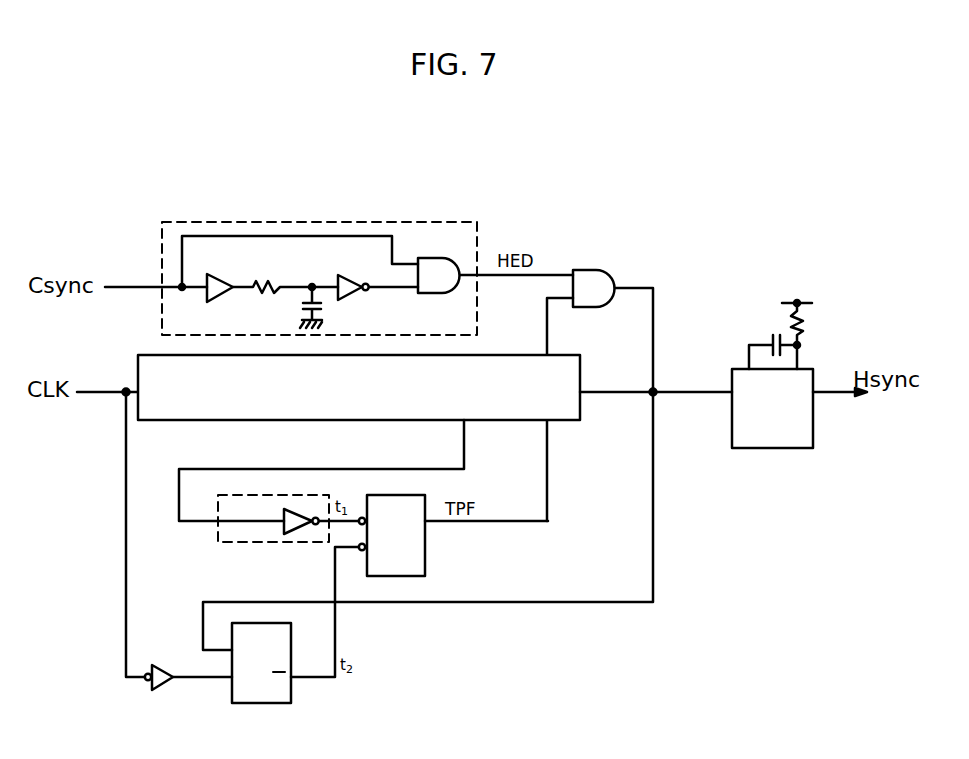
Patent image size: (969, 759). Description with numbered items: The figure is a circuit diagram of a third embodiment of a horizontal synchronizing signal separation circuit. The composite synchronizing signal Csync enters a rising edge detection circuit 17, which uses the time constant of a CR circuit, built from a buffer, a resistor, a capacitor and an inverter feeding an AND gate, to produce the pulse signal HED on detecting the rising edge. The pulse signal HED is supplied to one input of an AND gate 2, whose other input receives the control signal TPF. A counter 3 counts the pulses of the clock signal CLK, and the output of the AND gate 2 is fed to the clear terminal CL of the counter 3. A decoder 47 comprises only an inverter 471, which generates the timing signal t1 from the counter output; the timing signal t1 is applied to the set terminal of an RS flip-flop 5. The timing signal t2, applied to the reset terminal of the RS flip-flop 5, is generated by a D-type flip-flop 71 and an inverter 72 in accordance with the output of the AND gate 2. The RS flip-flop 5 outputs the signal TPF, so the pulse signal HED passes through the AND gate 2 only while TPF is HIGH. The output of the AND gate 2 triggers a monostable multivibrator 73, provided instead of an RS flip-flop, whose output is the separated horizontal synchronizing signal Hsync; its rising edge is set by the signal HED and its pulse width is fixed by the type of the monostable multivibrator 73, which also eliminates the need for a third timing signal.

The rising edge detection circuit 17 is at (477, 222).
The AND gate 2 is at (606, 271).
The counter 3 is at (497, 355).
The decoder 47 is at (244, 504).
The inverter 471 is at (298, 509).
The RS flip-flop 5 is at (425, 557).
The D-type flip-flop 71 is at (291, 695).
The inverter 72 is at (160, 685).
The monostable multivibrator 73 is at (767, 448).